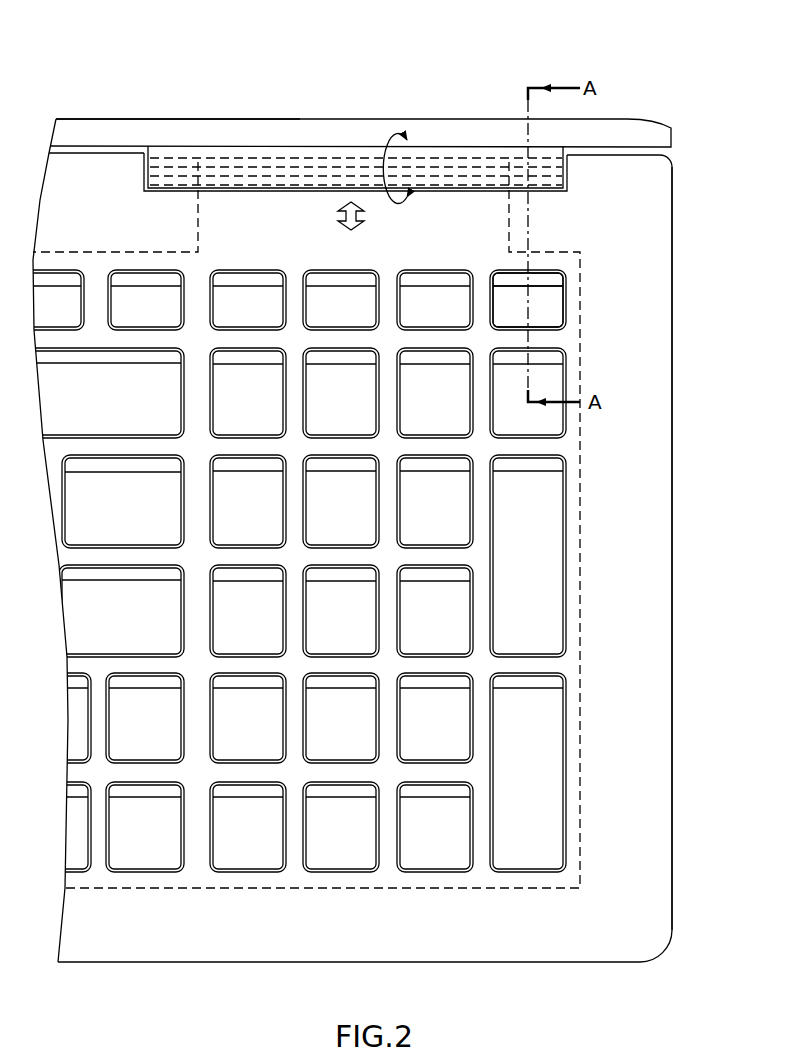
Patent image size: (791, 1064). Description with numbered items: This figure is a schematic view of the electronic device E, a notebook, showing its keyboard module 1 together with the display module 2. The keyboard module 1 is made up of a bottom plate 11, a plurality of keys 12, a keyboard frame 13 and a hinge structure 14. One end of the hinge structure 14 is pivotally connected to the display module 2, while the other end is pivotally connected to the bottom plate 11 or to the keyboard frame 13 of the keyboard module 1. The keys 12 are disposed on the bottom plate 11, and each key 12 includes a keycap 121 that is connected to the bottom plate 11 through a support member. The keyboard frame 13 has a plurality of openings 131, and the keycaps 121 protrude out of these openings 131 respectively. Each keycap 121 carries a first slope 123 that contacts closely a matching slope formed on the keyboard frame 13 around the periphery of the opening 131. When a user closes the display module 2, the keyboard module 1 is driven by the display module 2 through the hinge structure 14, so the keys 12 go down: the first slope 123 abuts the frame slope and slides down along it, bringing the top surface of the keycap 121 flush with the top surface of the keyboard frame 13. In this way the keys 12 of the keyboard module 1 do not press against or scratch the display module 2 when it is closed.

The electronic device E is at (118, 50).
The keyboard module 1 is at (677, 202).
The display module 2 is at (627, 130).
The bottom plate 11 is at (580, 493).
The key 12 is at (630, 272).
The keycap 121 is at (557, 310).
The first slope 123 is at (553, 280).
The keyboard frame 13 is at (650, 555).
The opening 131 is at (545, 330).
The hinge structure 14 is at (328, 157).